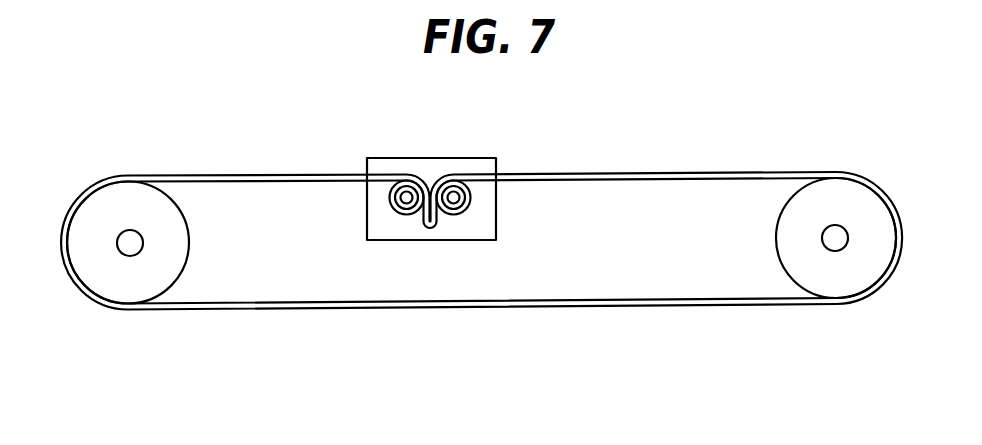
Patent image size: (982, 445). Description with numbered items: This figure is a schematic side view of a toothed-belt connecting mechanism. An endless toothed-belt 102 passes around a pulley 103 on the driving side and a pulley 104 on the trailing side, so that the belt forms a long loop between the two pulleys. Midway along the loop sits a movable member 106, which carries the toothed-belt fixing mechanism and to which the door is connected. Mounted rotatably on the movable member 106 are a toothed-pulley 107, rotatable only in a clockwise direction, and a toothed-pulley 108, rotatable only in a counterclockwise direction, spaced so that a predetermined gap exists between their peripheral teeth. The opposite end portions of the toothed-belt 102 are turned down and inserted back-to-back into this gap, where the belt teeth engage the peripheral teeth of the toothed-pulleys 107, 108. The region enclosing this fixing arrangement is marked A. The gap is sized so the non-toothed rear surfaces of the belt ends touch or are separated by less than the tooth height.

The endless toothed-belt 102 is at (632, 173).
The pulley on the driving side 103 is at (122, 285).
The pulley on the trailing side 104 is at (833, 282).
The movable member 106 is at (478, 163).
The toothed-pulley 107 is at (393, 207).
The toothed-pulley 108 is at (472, 201).
The detail region A is at (356, 139).